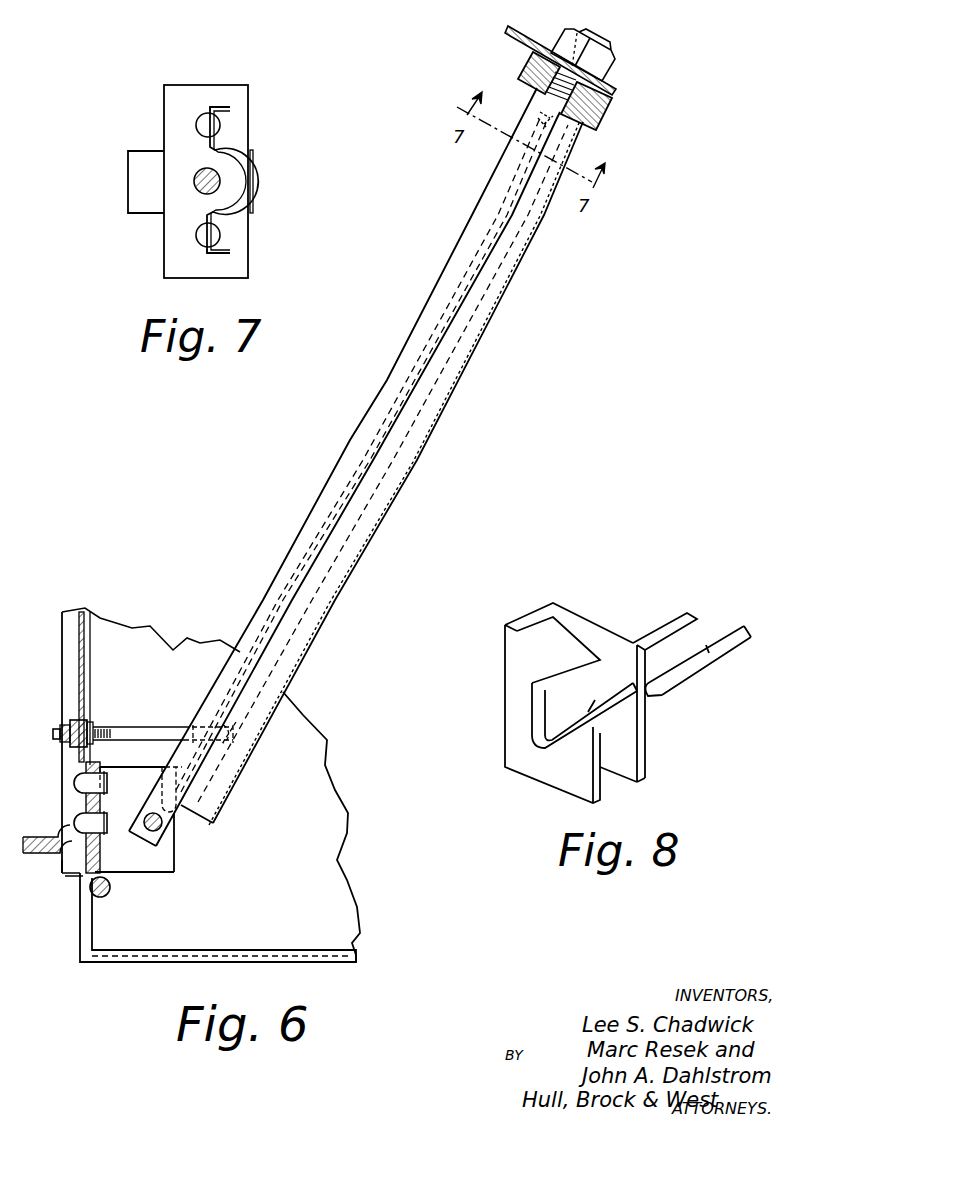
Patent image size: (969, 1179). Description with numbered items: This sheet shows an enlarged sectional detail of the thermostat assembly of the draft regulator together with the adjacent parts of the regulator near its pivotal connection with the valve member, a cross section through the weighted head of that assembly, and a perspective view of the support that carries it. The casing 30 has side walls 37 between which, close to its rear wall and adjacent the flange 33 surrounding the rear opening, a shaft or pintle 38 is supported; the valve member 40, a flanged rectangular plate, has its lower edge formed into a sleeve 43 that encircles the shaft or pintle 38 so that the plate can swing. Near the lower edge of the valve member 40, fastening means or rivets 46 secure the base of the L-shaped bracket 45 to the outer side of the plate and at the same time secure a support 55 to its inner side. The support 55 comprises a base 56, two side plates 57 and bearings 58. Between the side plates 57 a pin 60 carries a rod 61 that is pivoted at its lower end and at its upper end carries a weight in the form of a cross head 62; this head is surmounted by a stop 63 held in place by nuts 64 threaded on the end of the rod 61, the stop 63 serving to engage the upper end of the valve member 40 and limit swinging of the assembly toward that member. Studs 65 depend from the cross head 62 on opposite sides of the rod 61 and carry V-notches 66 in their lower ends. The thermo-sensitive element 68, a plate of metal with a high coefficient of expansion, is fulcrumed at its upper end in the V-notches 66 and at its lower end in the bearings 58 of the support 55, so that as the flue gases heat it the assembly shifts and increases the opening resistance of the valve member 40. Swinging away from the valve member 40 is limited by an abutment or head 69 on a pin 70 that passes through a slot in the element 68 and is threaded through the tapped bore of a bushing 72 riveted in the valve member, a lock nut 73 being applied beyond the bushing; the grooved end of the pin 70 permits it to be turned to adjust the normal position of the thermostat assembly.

In FIG. 6, the casing 30 is at (162, 963).
In FIG. 6, the flange 33 is at (66, 876).
In FIG. 6, the side walls 37 is at (338, 828).
In FIG. 6, the shaft or pintle 38 is at (107, 897).
In FIG. 6, the valve member 40 is at (86, 690).
In FIG. 6, the sleeve 43 is at (82, 900).
In FIG. 6, the L-shaped bracket 45 is at (42, 842).
In FIG. 6, the fastening means or rivets 46 is at (78, 824).
In FIG. 6, the support 55 is at (158, 860).
In FIG. 8, the support 55 is at (518, 714).
In FIG. 6, the base 56 is at (99, 776).
In FIG. 8, the base 56 is at (541, 610).
In FIG. 6, the side plates 57 is at (140, 857).
In FIG. 8, the side plates 57 is at (604, 640).
In FIG. 8, the bearings 58 is at (535, 740).
In FIG. 6, the pin 60 is at (168, 824).
In FIG. 7, the rod 61 is at (203, 193).
In FIG. 6, the rod 61 is at (292, 573).
In FIG. 7, the cross head 62 is at (249, 88).
In FIG. 6, the cross head 62 is at (604, 110).
In FIG. 7, the stop 63 is at (128, 190).
In FIG. 6, the stop 63 is at (538, 36).
In FIG. 6, the nuts 64 is at (613, 62).
In FIG. 7, the studs 65 is at (206, 116).
In FIG. 6, the studs 65 is at (552, 113).
In FIG. 7, the V-notches 66 is at (214, 131).
In FIG. 7, the thermo-sensitive element 68 is at (250, 204).
In FIG. 6, the thermo-sensitive element 68 is at (432, 421).
In FIG. 6, the abutment or head 69 is at (253, 748).
In FIG. 6, the pin 70 is at (153, 727).
In FIG. 6, the bushing 72 is at (80, 718).
In FIG. 6, the lock nut 73 is at (62, 722).